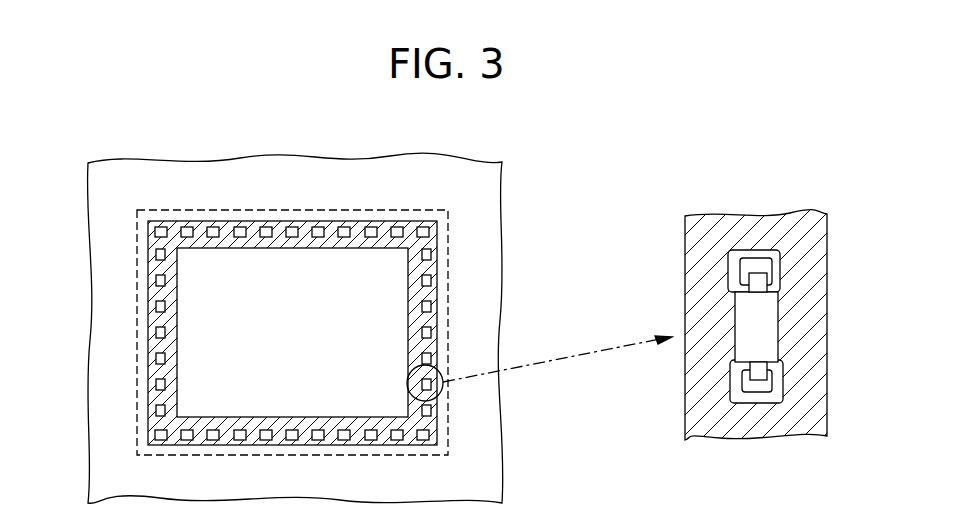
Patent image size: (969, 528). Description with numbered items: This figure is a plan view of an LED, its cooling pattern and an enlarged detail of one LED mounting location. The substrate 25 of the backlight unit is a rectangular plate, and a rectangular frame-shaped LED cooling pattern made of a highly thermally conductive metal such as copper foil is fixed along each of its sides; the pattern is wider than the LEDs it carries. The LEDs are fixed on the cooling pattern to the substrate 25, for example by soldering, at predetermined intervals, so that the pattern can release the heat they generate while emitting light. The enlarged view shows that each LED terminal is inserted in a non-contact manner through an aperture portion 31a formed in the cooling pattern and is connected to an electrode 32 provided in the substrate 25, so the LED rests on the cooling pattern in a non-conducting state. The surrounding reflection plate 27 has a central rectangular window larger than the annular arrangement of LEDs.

The substrate 25 is at (388, 295).
The reflection plate 27 is at (477, 330).
The aperture portion 31a is at (755, 250).
The electrode 32 is at (767, 267).